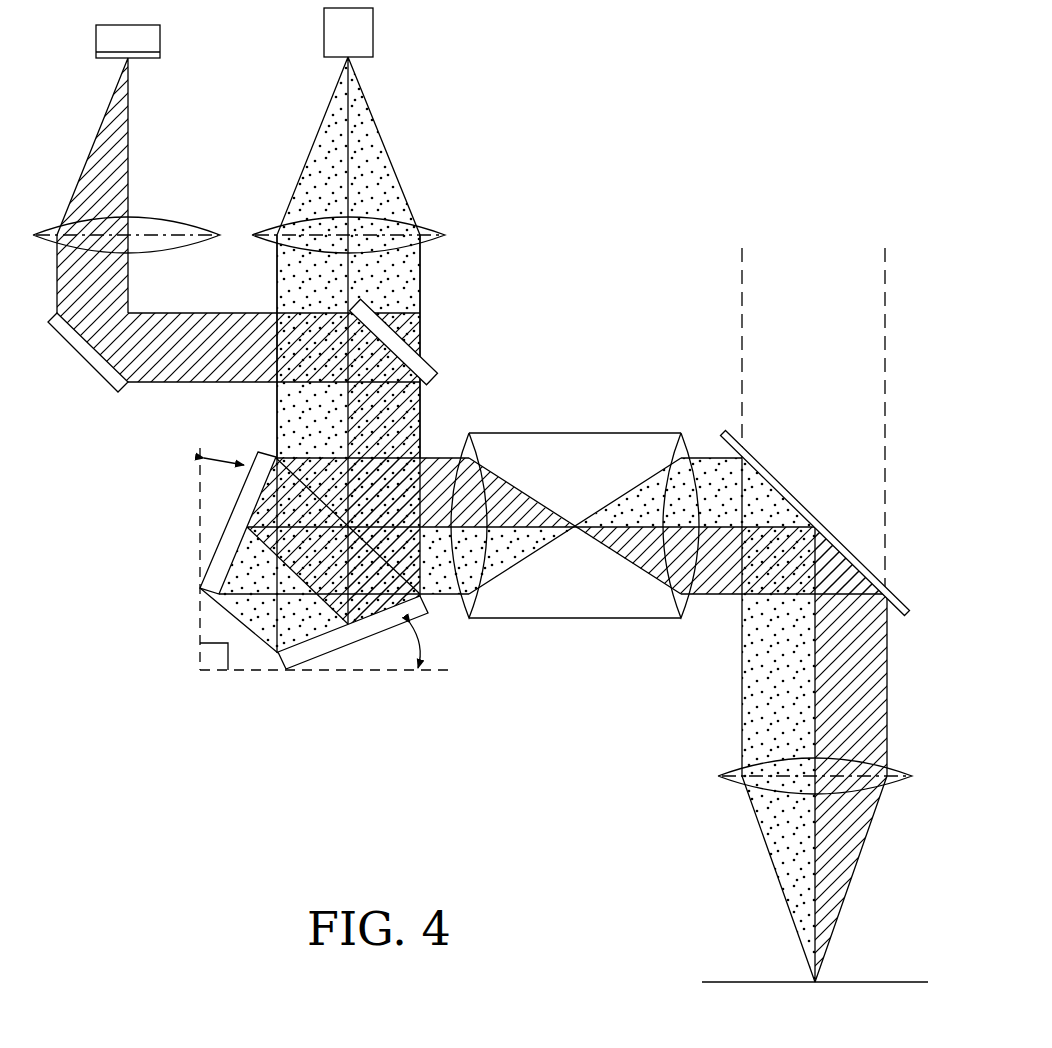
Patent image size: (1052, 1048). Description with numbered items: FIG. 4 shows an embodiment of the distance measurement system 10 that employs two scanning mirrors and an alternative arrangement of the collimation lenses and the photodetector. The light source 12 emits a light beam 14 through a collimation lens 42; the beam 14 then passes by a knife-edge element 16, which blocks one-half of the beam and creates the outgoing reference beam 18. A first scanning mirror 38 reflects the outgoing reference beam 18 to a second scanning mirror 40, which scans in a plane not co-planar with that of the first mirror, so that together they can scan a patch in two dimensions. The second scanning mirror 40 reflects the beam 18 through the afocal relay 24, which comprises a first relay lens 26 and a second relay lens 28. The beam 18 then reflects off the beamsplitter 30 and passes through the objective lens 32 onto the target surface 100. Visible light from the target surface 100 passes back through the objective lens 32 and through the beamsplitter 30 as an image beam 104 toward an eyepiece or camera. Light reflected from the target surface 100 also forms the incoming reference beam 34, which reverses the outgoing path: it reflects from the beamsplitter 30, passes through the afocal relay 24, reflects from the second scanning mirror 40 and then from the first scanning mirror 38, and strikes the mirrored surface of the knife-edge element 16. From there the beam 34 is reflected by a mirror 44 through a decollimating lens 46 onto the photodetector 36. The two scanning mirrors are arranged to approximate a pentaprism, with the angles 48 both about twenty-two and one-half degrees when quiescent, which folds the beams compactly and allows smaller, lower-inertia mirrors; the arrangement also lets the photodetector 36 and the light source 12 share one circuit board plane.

The distance measurement system 10 is at (634, 126).
The light source 12 is at (363, 36).
The light beam 14 is at (422, 297).
The knife-edge element 16 is at (430, 361).
The outgoing reference beam 18 is at (313, 168).
The afocal relay 24 is at (572, 620).
The first relay lens 26 is at (476, 452).
The second relay lens 28 is at (673, 452).
The beamsplitter 30 is at (818, 530).
The objective lens 32 is at (897, 782).
The incoming reference beam 34 is at (172, 380).
The photodetector 36 is at (152, 40).
The first scanning mirror 38 is at (305, 675).
The second scanning mirror 40 is at (212, 562).
The collimation lens 42 is at (428, 231).
The mirror 44 is at (102, 372).
The decollimating lens 46 is at (54, 232).
The angles 48 is at (222, 460).
The target surface 100 is at (757, 980).
The image beam 104 is at (760, 331).